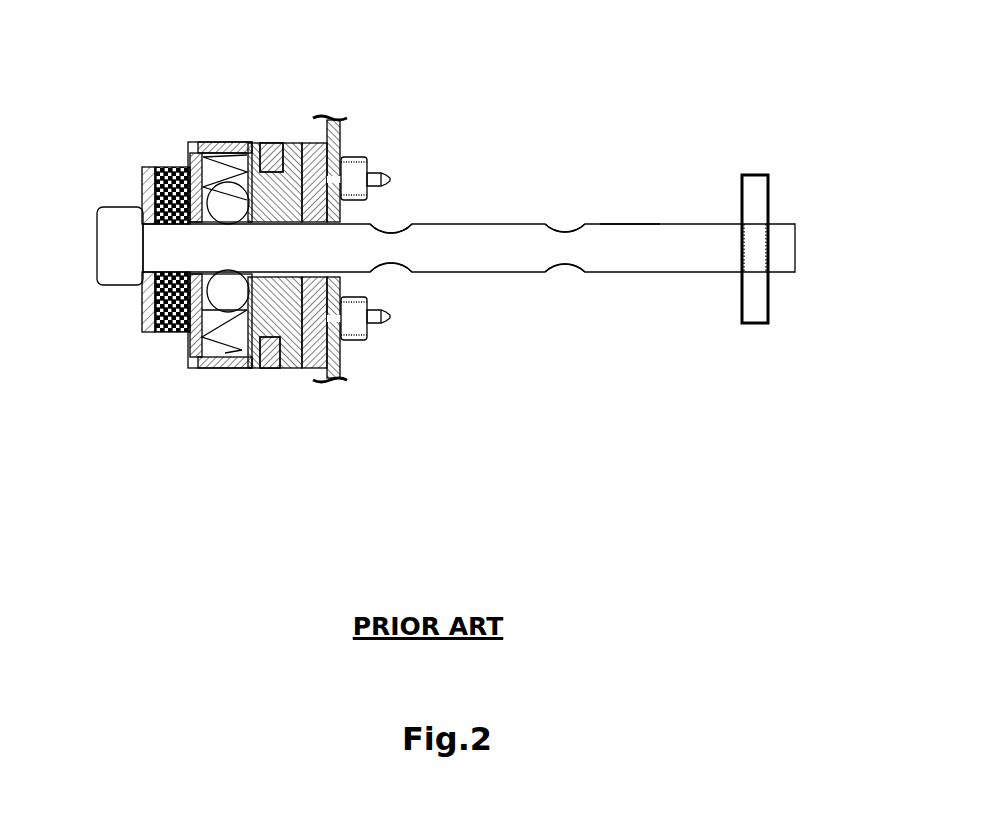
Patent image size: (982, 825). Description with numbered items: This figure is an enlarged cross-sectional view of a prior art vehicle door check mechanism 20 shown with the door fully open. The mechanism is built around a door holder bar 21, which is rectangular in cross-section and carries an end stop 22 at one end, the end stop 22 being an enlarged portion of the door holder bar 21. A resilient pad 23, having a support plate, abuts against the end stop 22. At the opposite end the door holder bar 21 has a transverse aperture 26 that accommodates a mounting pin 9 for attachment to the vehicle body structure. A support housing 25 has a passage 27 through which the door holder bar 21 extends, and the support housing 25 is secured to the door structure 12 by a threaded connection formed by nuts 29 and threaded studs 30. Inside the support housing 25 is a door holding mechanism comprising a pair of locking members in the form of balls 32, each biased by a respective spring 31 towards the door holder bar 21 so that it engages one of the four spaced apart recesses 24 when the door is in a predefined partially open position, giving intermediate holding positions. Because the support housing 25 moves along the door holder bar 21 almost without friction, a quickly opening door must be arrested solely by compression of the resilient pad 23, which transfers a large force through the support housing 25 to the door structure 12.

The mounting pin 9 is at (753, 175).
The door structure 12 is at (349, 198).
The vehicle door check mechanism 20 is at (690, 224).
The door holder bar 21 is at (630, 223).
The end stop 22 is at (112, 287).
The resilient pad 23 is at (167, 333).
The recesses 24 is at (597, 437).
The support housing 25 is at (268, 142).
The transverse aperture 26 is at (743, 248).
The passage 27 is at (287, 191).
The nuts 29 is at (363, 157).
The threaded studs 30 is at (380, 173).
The spring 31 is at (245, 192).
The balls 32 is at (228, 203).